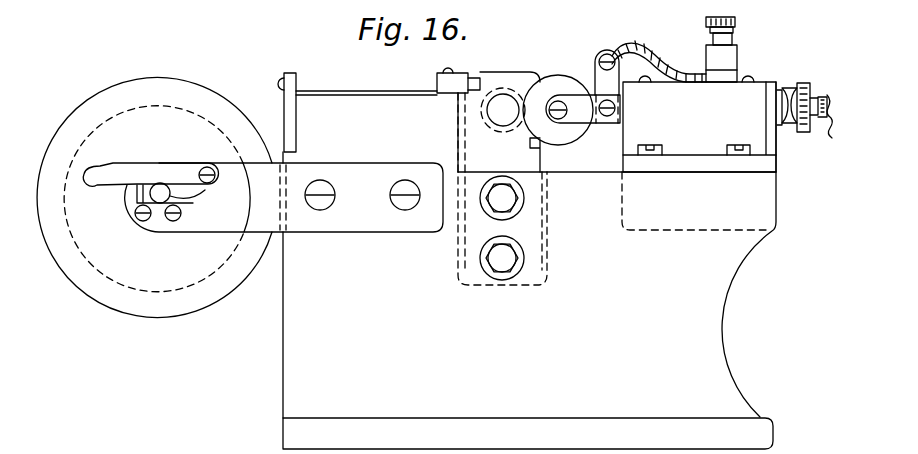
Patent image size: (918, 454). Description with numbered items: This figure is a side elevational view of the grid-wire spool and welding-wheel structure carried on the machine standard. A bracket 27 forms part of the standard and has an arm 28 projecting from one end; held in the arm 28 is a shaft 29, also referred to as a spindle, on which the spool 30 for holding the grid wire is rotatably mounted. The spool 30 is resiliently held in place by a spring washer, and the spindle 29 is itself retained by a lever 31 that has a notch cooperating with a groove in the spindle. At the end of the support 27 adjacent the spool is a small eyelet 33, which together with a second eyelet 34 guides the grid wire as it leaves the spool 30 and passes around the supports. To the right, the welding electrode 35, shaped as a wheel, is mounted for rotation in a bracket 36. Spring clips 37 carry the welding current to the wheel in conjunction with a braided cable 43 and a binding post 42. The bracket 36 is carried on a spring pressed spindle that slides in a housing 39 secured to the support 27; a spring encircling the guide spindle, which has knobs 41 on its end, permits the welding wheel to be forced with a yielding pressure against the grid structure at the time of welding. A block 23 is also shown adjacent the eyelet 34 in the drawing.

The block 23 is at (517, 78).
The bracket 27 is at (702, 325).
The arm 28 is at (372, 220).
The shaft 29 is at (170, 200).
The spool 30 is at (174, 300).
The lever 31 is at (120, 177).
The eyelet 33 is at (278, 84).
The eyelet 34 is at (480, 80).
The welding electrode 35 is at (540, 120).
The bracket 36 is at (603, 126).
The spring clips 37 is at (575, 107).
The housing 39 is at (699, 153).
The knobs 41 is at (804, 128).
The binding post 42 is at (730, 58).
The braided cable 43 is at (660, 50).